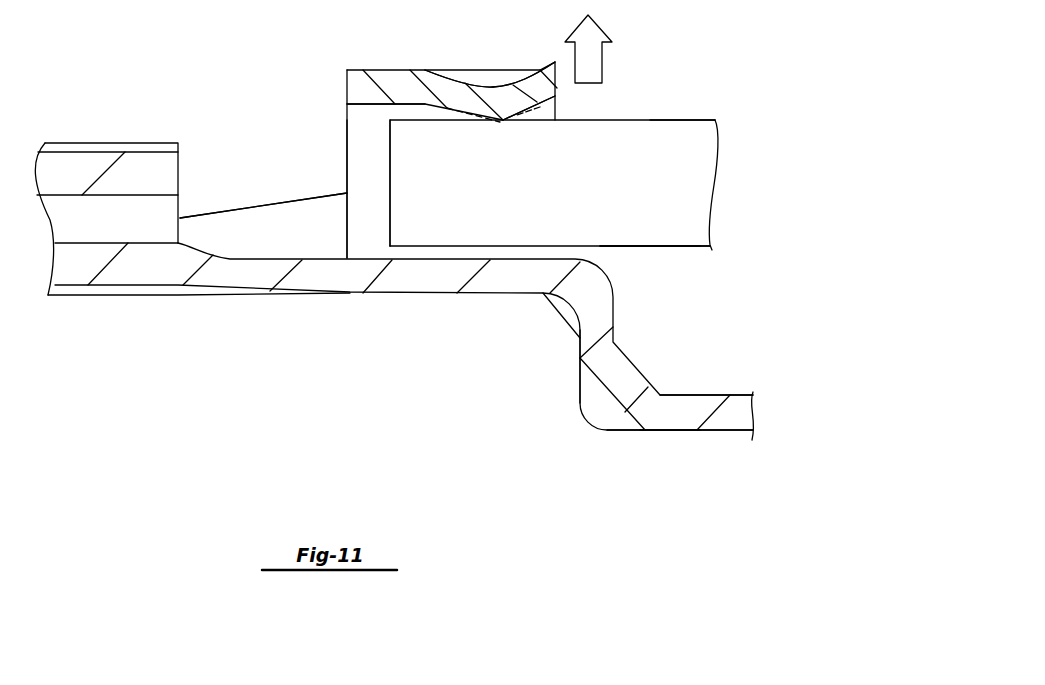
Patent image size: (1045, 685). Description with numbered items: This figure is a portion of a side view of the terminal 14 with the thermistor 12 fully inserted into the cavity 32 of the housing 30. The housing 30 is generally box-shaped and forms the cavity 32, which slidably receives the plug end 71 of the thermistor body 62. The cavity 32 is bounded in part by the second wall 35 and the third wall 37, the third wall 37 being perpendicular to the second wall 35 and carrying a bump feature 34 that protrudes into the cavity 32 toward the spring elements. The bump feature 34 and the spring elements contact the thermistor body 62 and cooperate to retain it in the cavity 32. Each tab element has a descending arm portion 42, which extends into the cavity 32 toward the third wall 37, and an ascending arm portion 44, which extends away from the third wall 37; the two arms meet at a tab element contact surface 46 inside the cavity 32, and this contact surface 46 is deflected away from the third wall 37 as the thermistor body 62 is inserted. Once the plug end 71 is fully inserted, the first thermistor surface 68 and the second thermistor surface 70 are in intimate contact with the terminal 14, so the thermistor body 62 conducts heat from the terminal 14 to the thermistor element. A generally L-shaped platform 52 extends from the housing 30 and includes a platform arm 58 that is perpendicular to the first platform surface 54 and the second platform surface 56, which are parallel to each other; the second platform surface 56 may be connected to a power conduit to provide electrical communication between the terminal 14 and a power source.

The thermistor 12 is at (704, 254).
The terminal 14 is at (292, 340).
The housing 30 is at (352, 60).
The cavity 32 is at (362, 128).
The bump feature 34 is at (417, 244).
The second wall 35 is at (355, 115).
The third wall 37 is at (355, 258).
The descending arm portion 42 is at (467, 82).
The ascending arm portion 44 is at (515, 82).
The tab element contact surface 46 is at (503, 121).
The platform 52 is at (733, 390).
The first platform surface 54 is at (707, 397).
The second platform surface 56 is at (680, 432).
The platform arm 58 is at (578, 365).
The thermistor body 62 is at (710, 108).
The first thermistor surface 68 is at (667, 120).
The second thermistor surface 70 is at (650, 248).
The plug end 71 is at (390, 186).